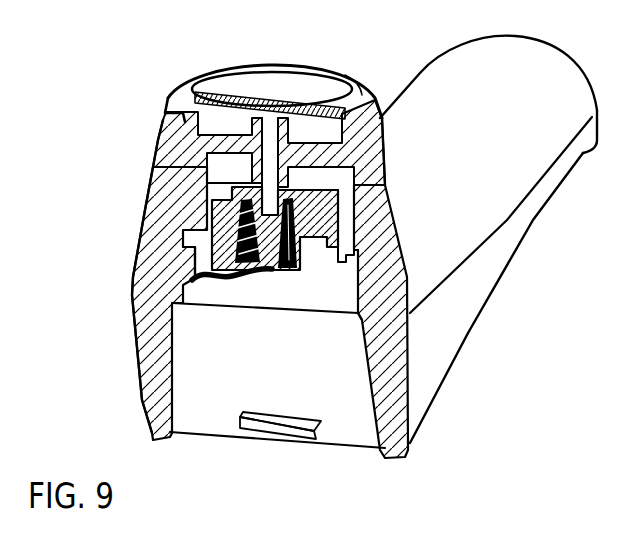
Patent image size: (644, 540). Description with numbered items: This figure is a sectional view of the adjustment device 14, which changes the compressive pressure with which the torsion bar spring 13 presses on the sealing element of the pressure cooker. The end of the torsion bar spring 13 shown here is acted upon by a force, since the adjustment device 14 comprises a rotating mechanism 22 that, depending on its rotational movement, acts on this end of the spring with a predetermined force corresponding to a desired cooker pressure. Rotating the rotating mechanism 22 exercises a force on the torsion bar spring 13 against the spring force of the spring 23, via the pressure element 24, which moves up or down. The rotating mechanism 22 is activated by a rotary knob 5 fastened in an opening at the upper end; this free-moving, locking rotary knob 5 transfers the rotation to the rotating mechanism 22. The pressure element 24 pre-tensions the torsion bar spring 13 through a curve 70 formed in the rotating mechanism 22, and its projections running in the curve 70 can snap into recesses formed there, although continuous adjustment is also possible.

The rotary knob 5 is at (192, 90).
The adjustment device 14 is at (270, 212).
The curve 70 is at (213, 212).
The spring 23 is at (184, 231).
The rotating mechanism 22 is at (333, 210).
The torsion bar spring 13 is at (258, 278).
The pressure element 24 is at (267, 277).